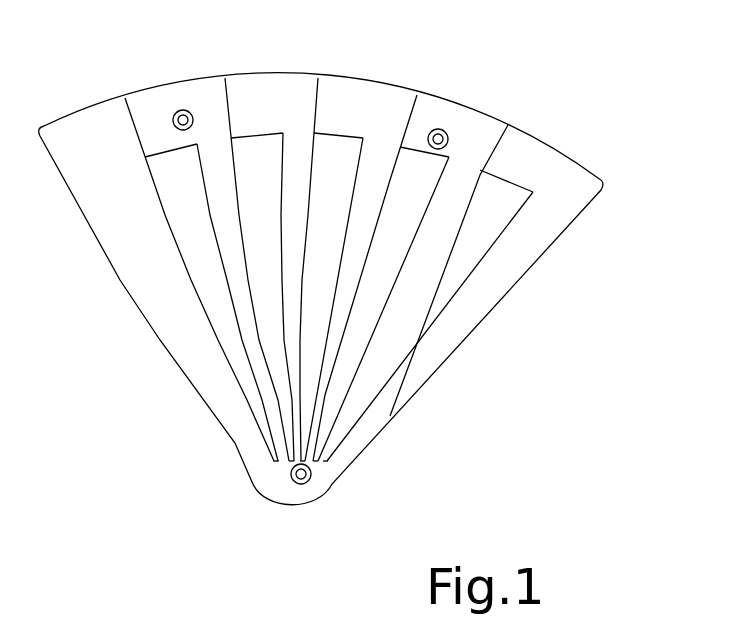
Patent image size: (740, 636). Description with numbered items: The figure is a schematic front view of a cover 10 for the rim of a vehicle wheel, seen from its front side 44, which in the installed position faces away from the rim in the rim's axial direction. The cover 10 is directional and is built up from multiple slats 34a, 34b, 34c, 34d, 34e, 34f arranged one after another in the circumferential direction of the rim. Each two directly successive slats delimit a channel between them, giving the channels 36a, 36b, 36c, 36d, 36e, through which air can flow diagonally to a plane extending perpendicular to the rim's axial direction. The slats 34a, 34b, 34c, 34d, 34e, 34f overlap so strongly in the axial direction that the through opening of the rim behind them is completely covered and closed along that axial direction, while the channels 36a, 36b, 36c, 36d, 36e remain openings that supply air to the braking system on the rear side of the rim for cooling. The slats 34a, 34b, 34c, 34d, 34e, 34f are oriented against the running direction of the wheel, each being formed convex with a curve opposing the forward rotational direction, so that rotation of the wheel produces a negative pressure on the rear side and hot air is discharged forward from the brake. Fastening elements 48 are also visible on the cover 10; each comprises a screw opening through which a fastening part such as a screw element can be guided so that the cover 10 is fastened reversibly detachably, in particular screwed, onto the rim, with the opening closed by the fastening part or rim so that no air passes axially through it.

The cover 10 is at (577, 160).
The slat 34a is at (475, 300).
The slat 34b is at (458, 172).
The slat 34c is at (338, 157).
The slat 34d is at (255, 157).
The slat 34e is at (175, 165).
The slat 34f is at (85, 130).
The channel 36a is at (503, 223).
The channel 36b is at (385, 267).
The channel 36c is at (323, 290).
The channel 36d is at (280, 343).
The channel 36e is at (255, 388).
The front side 44 is at (529, 268).
The fastening element 48 is at (190, 108).